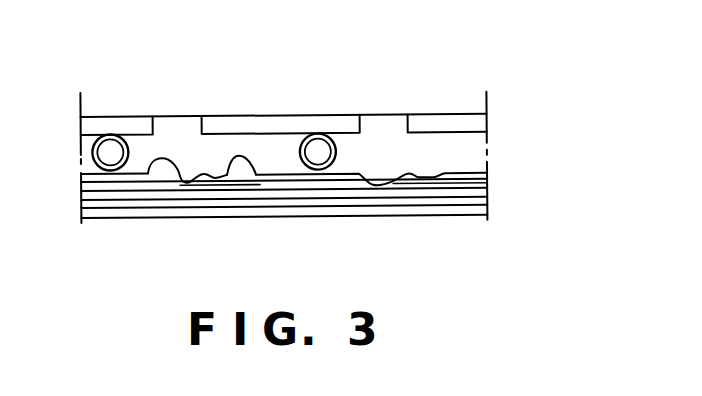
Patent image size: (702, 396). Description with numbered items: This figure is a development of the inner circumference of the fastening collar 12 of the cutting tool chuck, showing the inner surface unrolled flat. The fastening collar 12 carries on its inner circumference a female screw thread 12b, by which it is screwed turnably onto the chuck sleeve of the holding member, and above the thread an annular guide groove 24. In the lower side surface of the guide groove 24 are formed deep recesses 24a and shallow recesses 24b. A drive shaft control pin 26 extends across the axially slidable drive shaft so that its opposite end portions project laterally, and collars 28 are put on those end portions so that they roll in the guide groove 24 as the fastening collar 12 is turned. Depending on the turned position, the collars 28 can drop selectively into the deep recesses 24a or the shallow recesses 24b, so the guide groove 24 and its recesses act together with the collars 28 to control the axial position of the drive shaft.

The fastening collar 12 is at (447, 117).
The female screw thread 12b is at (350, 200).
The annular guide groove 24 is at (460, 146).
The deep recess 24a is at (143, 175).
The shallow recess 24b is at (256, 177).
The drive shaft control pin 26 is at (323, 148).
The collar 28 is at (292, 117).